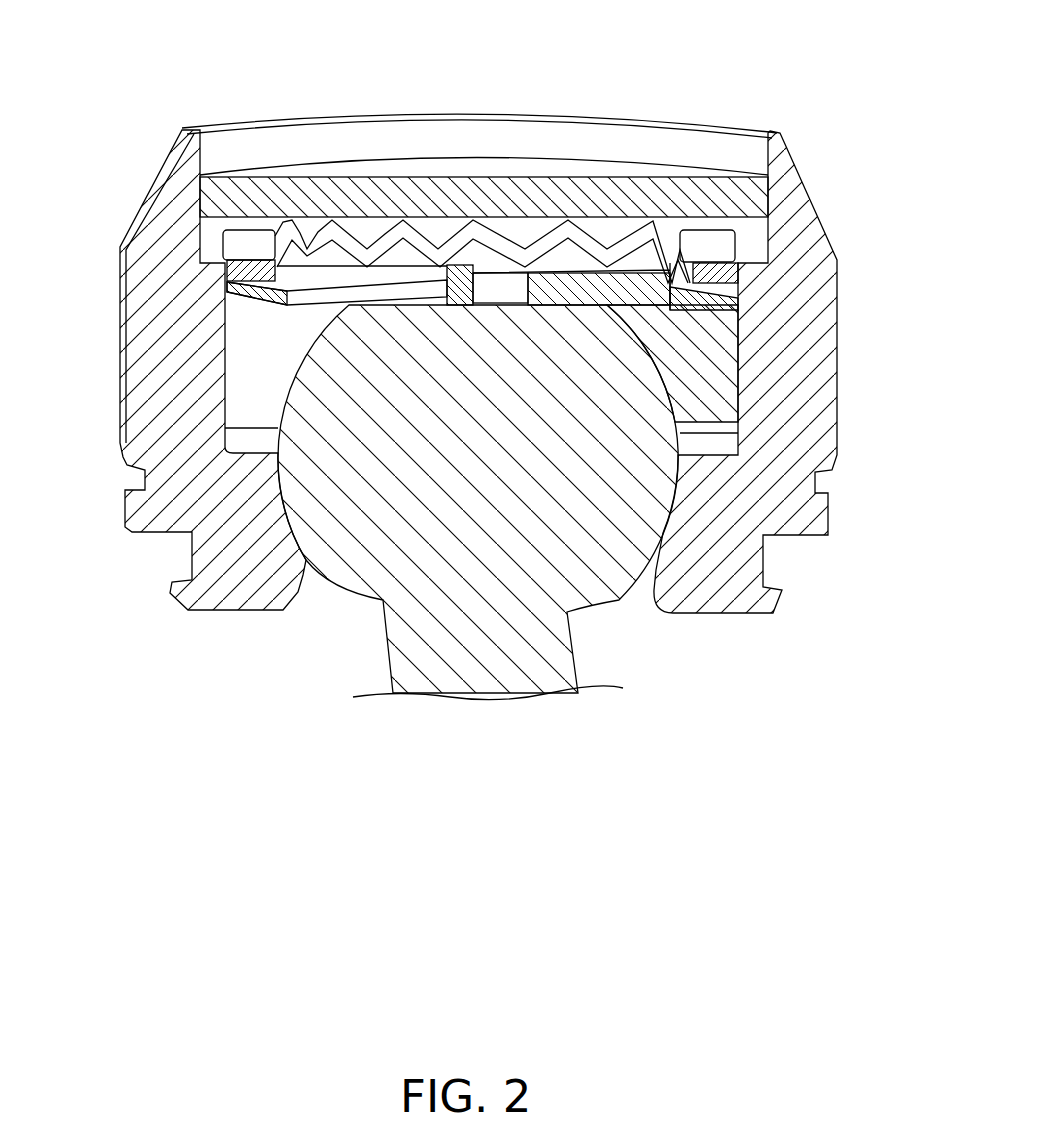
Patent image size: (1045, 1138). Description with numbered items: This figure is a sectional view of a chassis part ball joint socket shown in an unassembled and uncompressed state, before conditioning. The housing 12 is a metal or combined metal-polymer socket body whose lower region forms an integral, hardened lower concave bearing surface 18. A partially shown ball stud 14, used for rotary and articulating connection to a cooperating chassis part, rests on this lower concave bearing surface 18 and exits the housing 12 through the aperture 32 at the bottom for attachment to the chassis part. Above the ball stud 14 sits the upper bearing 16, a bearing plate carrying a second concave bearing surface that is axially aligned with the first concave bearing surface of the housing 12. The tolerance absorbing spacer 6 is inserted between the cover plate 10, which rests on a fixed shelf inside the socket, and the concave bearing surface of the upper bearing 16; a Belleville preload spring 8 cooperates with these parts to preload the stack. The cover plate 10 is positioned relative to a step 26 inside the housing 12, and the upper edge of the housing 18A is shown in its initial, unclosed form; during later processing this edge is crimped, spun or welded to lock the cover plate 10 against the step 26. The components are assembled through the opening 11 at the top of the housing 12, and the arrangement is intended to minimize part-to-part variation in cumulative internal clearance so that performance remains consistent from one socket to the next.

The tolerance absorbing spacer 6 is at (713, 247).
The Belleville preload spring 8 is at (733, 293).
The cover plate 10 is at (747, 195).
The opening 11 is at (768, 142).
The housing 12 is at (798, 397).
The ball stud 14 is at (517, 681).
The upper bearing 16 is at (713, 382).
The lower concave bearing surface 18 is at (250, 527).
The upper edge of the housing 18A is at (188, 148).
The step 26 is at (768, 270).
The aperture 32 is at (303, 555).